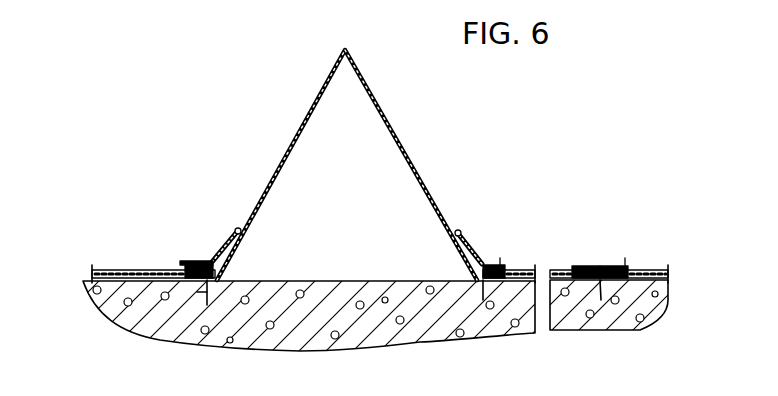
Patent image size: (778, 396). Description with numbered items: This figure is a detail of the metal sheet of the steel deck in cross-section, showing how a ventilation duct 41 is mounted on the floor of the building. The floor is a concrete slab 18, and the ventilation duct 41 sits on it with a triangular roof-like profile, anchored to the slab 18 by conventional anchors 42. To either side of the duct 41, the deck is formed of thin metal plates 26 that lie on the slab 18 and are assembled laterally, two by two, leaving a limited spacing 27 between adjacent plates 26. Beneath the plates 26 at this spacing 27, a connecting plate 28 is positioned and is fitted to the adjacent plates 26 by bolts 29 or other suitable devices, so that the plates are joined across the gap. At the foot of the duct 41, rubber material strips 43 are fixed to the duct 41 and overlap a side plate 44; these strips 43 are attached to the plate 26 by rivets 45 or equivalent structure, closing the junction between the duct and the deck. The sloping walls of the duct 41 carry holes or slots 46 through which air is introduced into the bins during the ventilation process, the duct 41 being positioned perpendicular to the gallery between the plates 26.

The concrete slab 18 is at (387, 322).
The thin metal plates 26 is at (108, 267).
The limited spacing 27 is at (604, 263).
The connecting plate 28 is at (601, 283).
The bolts 29 is at (583, 263).
The ventilation ducts 41 is at (288, 122).
The anchors 42 is at (190, 292).
The rubber material strips 43 is at (235, 231).
The side plate 44 is at (203, 263).
The rivets 45 is at (190, 258).
The holes or slots 46 is at (405, 150).